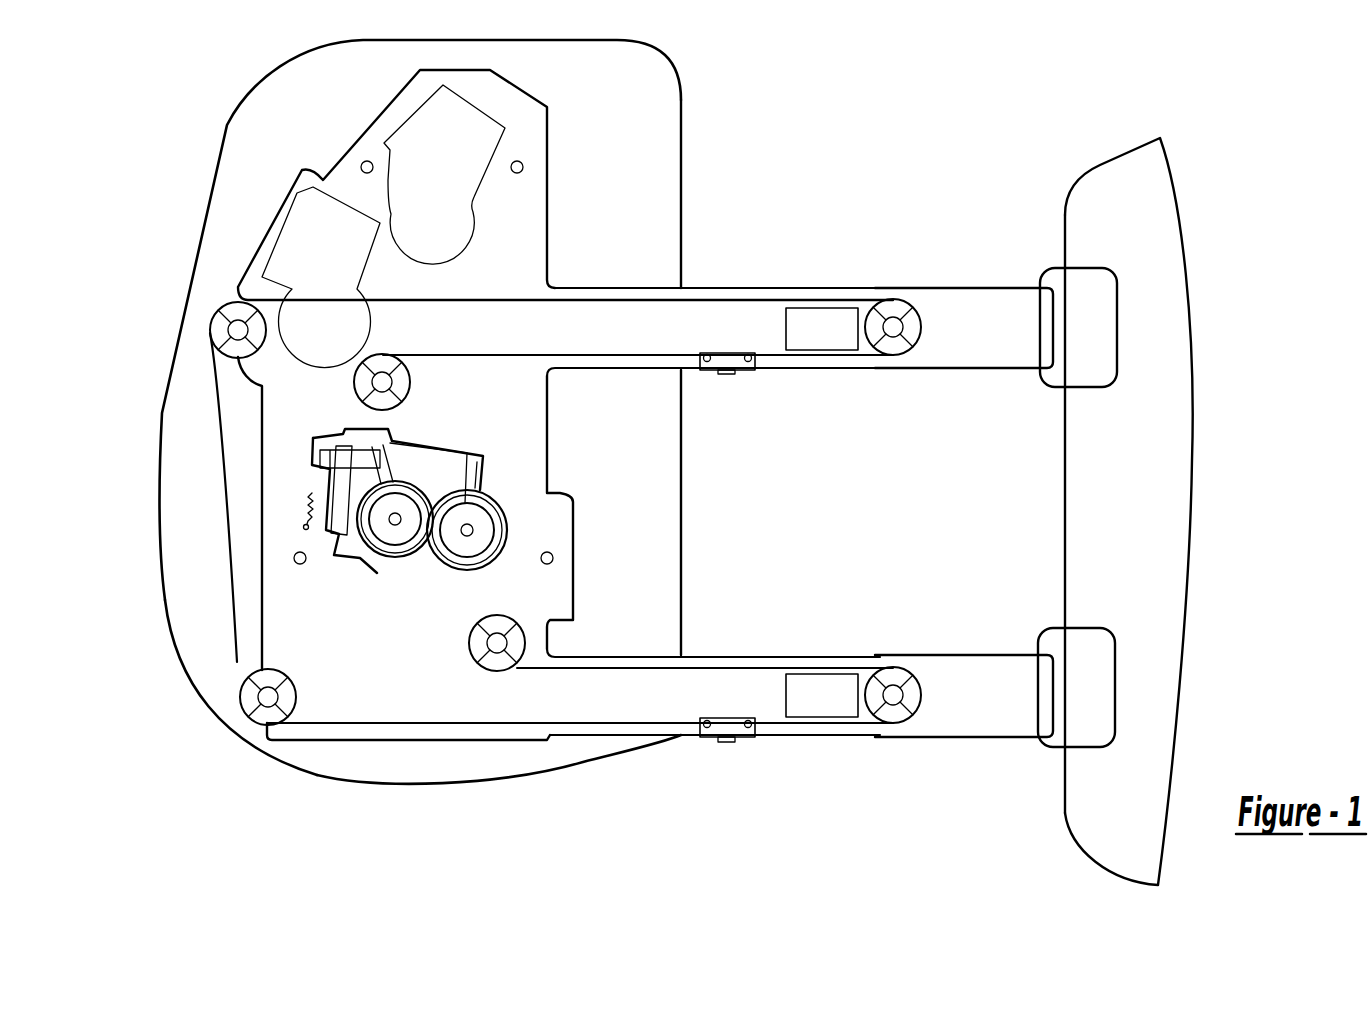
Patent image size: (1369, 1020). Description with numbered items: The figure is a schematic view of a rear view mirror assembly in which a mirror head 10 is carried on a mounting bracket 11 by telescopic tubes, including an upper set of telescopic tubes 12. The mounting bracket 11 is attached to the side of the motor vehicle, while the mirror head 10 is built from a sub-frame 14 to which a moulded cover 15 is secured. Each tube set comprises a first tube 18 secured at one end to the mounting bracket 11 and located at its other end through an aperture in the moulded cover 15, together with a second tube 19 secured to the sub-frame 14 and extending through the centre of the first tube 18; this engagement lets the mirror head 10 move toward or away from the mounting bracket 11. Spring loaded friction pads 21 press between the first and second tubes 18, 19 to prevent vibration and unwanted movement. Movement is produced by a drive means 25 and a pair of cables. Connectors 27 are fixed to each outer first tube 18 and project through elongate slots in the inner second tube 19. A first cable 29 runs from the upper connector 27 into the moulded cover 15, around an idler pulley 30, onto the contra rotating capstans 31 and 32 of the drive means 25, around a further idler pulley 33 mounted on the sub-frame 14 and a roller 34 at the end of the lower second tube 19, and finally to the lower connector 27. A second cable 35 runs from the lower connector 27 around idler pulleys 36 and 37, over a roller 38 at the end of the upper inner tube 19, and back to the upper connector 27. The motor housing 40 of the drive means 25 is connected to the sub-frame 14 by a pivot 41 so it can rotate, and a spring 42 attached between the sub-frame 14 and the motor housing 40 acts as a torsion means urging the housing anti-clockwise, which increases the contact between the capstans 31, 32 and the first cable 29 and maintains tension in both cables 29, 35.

The mirror head 10 is at (353, 790).
The mounting bracket 11 is at (1098, 160).
The upper set of telescopic tubes 12 is at (862, 222).
The sub-frame 14 is at (550, 213).
The moulded cover 15 is at (257, 757).
The first tube 18 is at (962, 312).
The second tube 19 is at (657, 370).
The friction pads 21 is at (818, 328).
The drive means 25 is at (470, 447).
The connectors 27 is at (727, 352).
The first cable 29 is at (505, 355).
The idler pulley 30 is at (401, 389).
The contra rotating capstan 31 is at (432, 520).
The contra rotating capstan 32 is at (483, 532).
The idler pulley 33 is at (517, 620).
The roller 34 is at (922, 704).
The second cable 35 is at (392, 300).
The idler pulley 36 is at (262, 682).
The idler pulley 37 is at (212, 323).
The roller 38 is at (908, 300).
The motor housing 40 is at (392, 560).
The pivot 41 is at (434, 564).
The spring 42 is at (310, 494).